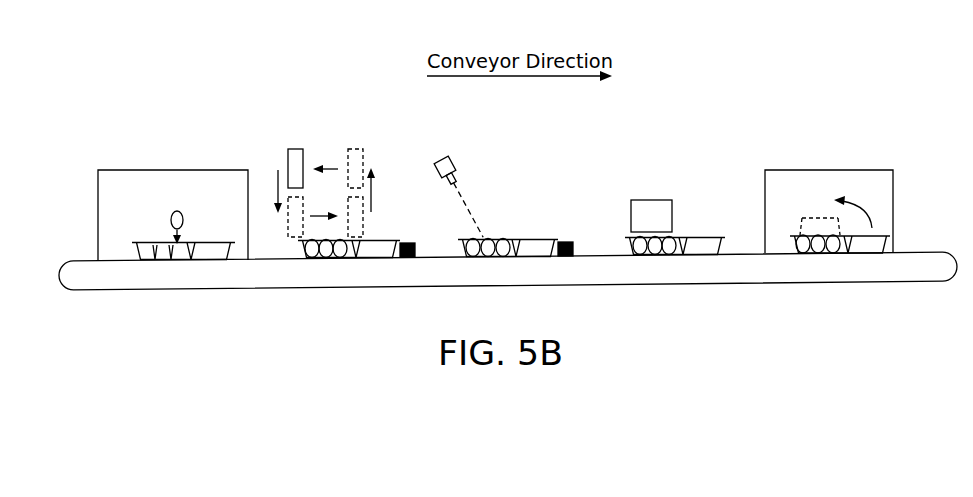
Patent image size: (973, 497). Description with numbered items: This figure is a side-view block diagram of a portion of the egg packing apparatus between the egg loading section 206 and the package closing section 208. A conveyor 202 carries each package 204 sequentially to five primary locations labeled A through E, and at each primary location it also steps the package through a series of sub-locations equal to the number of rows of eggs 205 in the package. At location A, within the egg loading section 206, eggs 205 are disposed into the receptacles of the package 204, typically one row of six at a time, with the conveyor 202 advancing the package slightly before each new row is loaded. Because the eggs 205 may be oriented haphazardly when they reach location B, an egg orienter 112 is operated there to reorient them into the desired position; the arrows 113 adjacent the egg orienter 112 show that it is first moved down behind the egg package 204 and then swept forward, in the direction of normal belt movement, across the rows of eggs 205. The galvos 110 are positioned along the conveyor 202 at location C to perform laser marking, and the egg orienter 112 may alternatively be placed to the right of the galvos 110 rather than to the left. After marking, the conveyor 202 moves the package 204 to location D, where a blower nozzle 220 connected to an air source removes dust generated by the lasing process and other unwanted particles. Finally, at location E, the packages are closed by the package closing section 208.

The galvos 110 is at (453, 156).
The egg orienter 112 is at (304, 157).
The arrows 113 is at (278, 178).
The conveyor 202 is at (120, 291).
The package 204 is at (213, 242).
The eggs 205 is at (172, 212).
The egg loading section 206 is at (172, 170).
The package closing section 208 is at (826, 170).
The blower nozzle 220 is at (652, 200).